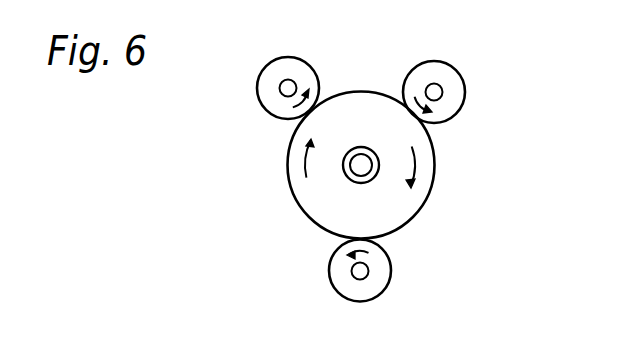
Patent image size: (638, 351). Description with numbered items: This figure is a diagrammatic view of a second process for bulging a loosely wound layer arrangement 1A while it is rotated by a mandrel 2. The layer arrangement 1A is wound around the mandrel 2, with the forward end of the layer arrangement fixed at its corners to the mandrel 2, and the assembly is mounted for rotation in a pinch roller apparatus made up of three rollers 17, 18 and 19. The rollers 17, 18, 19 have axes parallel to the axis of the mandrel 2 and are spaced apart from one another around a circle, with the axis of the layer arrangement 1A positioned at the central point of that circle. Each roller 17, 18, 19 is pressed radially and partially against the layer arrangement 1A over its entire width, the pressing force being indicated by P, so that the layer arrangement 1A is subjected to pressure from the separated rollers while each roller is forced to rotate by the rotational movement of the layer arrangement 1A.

The loosely wound layer arrangement 1A is at (433, 163).
The mandrel 2 is at (372, 176).
The roller 17 is at (392, 277).
The roller 18 is at (307, 60).
The roller 19 is at (465, 100).
The pressing force P is at (264, 64).